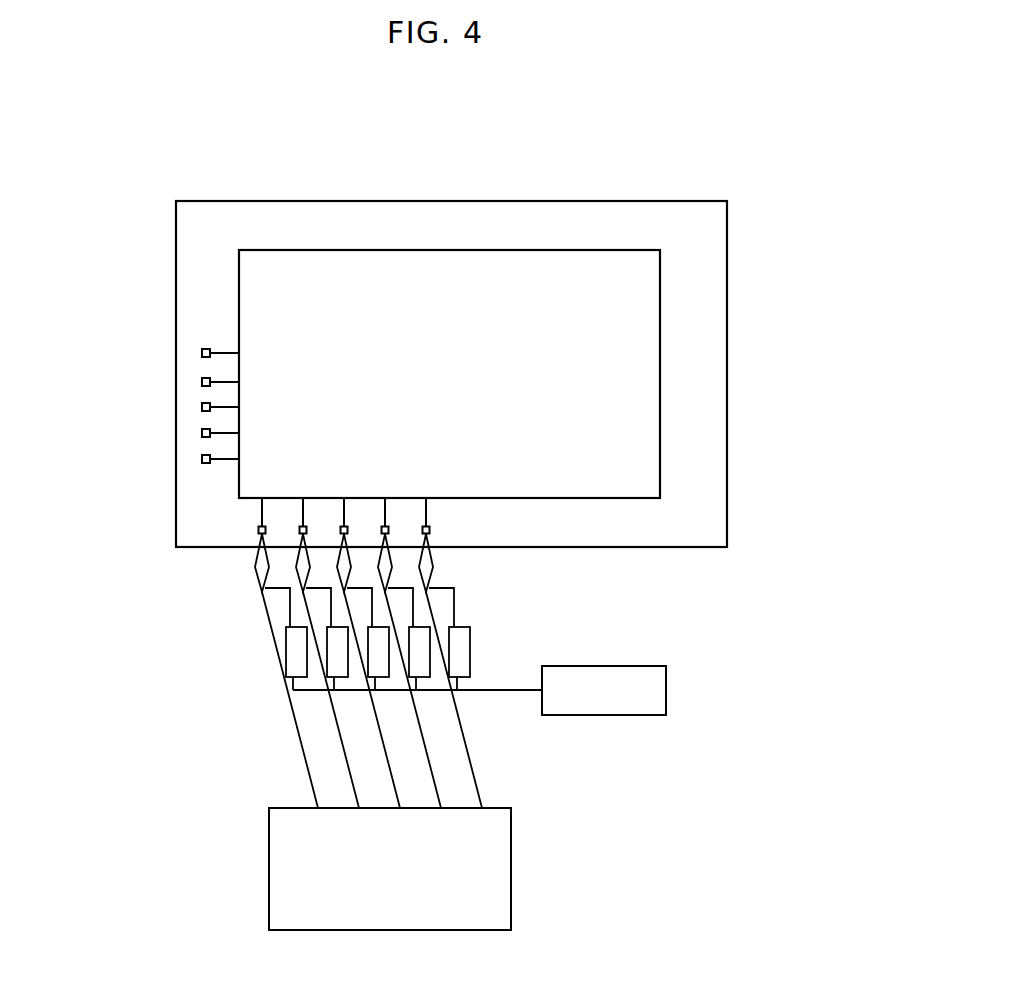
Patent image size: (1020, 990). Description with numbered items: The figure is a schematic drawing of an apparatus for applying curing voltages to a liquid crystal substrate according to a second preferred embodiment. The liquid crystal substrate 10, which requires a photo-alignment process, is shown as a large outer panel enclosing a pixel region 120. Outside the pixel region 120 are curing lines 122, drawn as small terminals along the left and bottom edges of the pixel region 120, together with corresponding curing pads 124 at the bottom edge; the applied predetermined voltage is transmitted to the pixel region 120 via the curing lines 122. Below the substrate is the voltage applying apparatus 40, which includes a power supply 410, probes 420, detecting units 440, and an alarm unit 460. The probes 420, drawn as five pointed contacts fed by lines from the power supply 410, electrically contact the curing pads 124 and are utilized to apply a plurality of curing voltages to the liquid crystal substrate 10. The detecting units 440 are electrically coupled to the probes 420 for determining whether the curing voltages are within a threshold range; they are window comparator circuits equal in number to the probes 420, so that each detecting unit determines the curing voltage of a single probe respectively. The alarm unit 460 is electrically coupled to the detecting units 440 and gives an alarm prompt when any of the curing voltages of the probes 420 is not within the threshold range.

The liquid crystal substrate 10 is at (650, 160).
The pixel region 120 is at (660, 300).
The curing lines 122 is at (228, 352).
The curing pads 124 is at (430, 530).
The voltage applying apparatus 40 is at (153, 753).
The power supply 410 is at (512, 869).
The probes 420 is at (255, 576).
The detecting units 440 is at (471, 633).
The alarm unit 460 is at (620, 715).